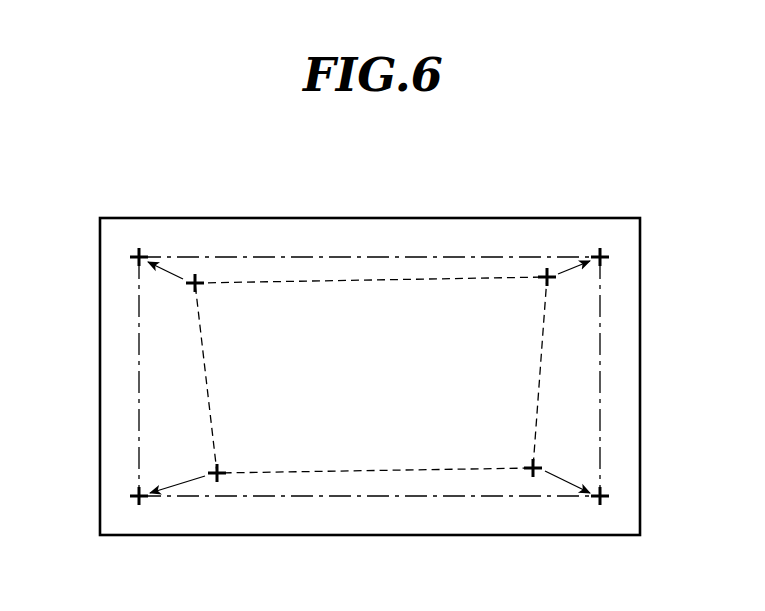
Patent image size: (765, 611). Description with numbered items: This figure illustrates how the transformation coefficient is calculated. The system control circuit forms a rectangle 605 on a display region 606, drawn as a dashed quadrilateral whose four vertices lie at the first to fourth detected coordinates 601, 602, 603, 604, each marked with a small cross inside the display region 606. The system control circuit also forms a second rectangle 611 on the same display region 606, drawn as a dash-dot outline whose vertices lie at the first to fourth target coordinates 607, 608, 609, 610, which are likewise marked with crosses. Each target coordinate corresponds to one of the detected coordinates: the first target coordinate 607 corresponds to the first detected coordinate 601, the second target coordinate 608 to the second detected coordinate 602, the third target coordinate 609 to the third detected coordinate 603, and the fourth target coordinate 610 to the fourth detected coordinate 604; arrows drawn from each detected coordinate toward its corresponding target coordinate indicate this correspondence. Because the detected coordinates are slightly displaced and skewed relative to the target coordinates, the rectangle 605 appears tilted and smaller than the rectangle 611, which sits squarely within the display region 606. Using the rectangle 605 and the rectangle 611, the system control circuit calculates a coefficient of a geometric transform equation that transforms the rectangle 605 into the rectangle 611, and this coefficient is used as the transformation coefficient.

The first detected coordinate 601 is at (195, 283).
The second detected coordinate 602 is at (217, 473).
The third detected coordinate 603 is at (547, 277).
The fourth detected coordinate 604 is at (533, 468).
The rectangle 605 is at (392, 470).
The display region 606 is at (596, 218).
The first target coordinate 607 is at (135, 257).
The second target coordinate 608 is at (135, 496).
The third target coordinate 609 is at (603, 496).
The fourth target coordinate 610 is at (603, 257).
The rectangle 611 is at (328, 255).